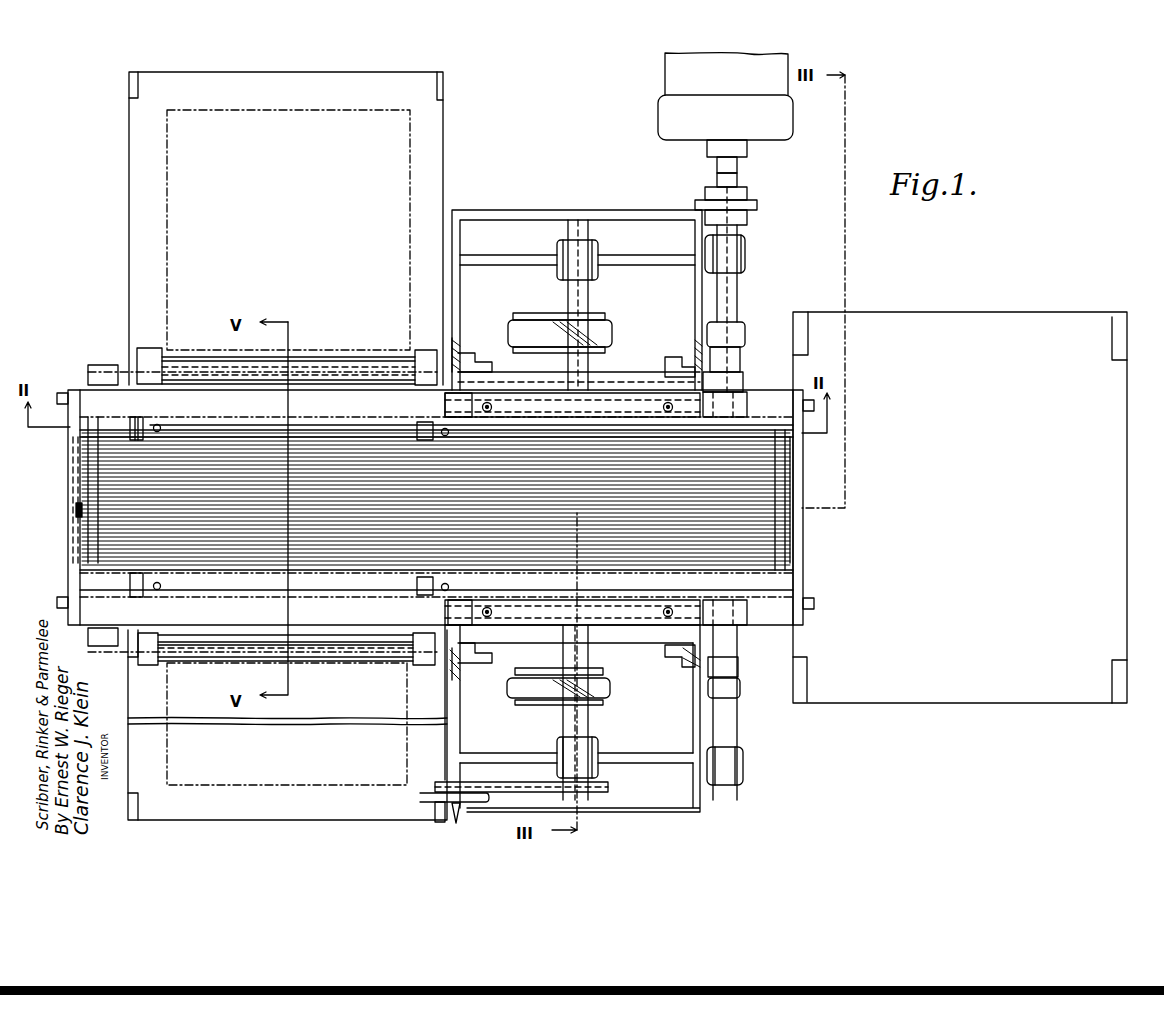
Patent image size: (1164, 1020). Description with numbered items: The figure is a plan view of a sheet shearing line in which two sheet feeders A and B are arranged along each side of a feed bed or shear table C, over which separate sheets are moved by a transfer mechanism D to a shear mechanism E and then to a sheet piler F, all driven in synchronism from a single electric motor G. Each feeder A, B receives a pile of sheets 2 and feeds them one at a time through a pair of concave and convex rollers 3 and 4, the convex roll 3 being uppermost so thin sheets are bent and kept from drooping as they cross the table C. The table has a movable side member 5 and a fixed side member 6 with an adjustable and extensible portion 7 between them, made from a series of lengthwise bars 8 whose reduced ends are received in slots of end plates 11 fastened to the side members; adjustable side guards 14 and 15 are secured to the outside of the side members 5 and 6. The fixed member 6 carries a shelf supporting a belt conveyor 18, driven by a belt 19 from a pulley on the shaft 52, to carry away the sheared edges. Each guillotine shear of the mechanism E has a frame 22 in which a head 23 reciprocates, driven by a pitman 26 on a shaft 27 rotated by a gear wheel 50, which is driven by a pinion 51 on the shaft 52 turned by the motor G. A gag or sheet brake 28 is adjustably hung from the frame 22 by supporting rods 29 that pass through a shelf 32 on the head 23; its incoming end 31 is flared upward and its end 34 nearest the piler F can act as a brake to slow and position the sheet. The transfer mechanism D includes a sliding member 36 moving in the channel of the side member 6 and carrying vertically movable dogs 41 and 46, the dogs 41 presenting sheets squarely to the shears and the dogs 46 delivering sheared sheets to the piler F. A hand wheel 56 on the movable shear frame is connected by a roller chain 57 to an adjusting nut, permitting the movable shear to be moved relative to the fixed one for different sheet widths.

The pile of sheets 2 is at (167, 183).
The convex roller 3 is at (412, 352).
The concave roller 4 is at (172, 363).
The movable side member 5 is at (257, 642).
The fixed side member 6 is at (86, 391).
The adjustable and extensible portion 7 is at (787, 484).
The bars 8 is at (77, 515).
The end plates 11 is at (70, 437).
The adjustable side guard 14 is at (335, 647).
The adjustable side guard 15 is at (330, 368).
The belt conveyor 18 is at (741, 373).
The belt 19 is at (743, 337).
The shear frame 22 is at (455, 224).
The head 23 is at (515, 385).
The pitman 26 is at (530, 325).
The shaft 27 is at (584, 730).
The gag or sheet brake 28 is at (468, 392).
The supporting rods 29 is at (492, 407).
The flared end of gag 31 is at (460, 372).
The projecting member or shelf 32 is at (603, 390).
The end of gag 34 is at (682, 380).
The sliding member 36 is at (255, 430).
The vertically movable dog 41 is at (158, 425).
The vertically movable dog 46 is at (420, 430).
The gear wheel 50 is at (445, 403).
The pinion 51 is at (748, 408).
The shaft 52 is at (735, 288).
The hand wheel 56 is at (478, 806).
The roller chain 57 is at (515, 791).
The sheet feeder A is at (272, 86).
The sheet feeder B is at (318, 808).
The feed bed or shear table C is at (78, 488).
The transfer mechanism D is at (364, 606).
The shear mechanism E is at (633, 529).
The sheet piler F is at (970, 319).
The electric motor G is at (668, 75).